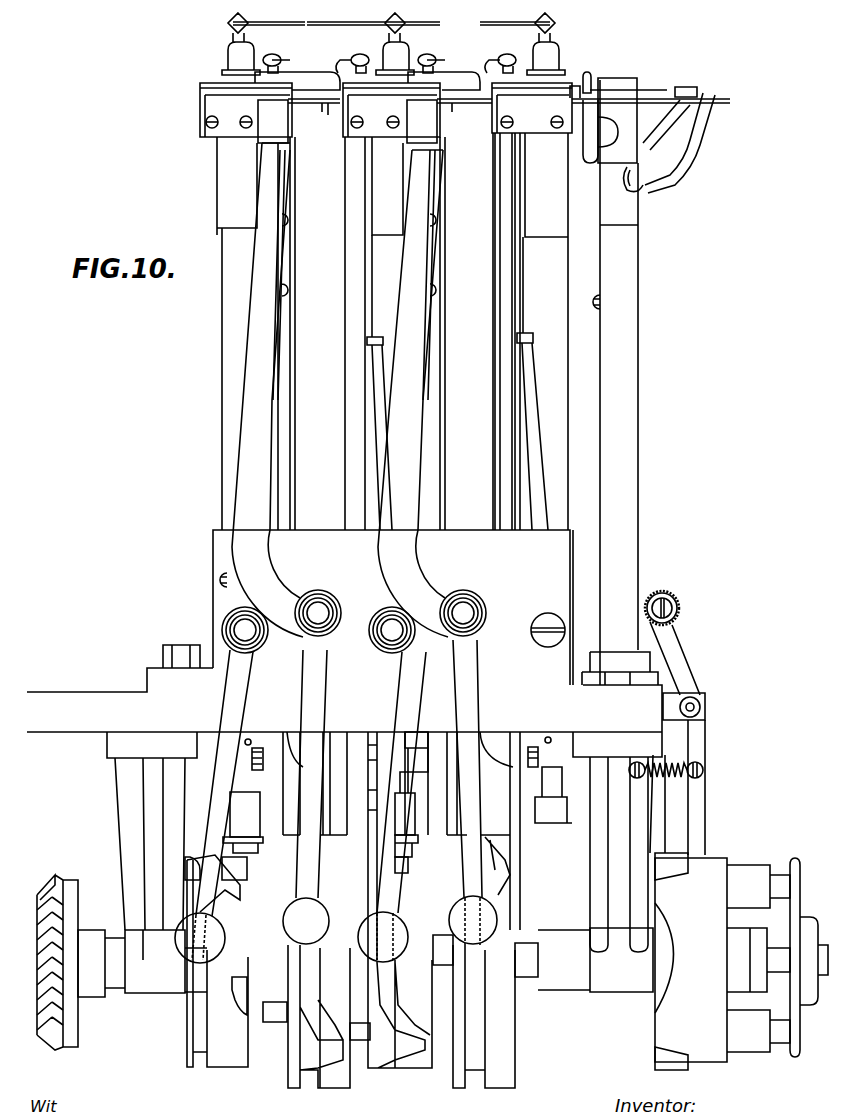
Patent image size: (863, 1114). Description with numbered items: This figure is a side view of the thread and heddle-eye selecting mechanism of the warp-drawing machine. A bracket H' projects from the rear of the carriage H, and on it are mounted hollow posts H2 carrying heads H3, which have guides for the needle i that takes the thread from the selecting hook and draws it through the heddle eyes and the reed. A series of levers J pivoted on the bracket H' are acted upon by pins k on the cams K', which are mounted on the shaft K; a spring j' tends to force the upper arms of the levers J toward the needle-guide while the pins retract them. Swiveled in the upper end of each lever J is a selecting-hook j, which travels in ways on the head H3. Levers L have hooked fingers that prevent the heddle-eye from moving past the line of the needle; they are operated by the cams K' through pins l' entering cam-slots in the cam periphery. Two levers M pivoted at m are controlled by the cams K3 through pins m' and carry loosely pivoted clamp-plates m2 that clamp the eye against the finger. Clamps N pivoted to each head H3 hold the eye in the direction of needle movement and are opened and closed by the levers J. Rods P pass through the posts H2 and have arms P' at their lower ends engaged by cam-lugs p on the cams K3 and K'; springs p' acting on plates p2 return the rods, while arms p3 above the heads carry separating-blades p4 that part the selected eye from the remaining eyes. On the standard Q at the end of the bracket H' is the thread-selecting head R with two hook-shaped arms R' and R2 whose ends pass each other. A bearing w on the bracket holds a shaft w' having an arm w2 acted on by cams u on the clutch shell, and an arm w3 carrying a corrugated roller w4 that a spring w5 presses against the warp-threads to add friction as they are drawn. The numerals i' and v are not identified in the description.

The separating-blade p4 is at (391, 16).
The arm p3 is at (389, 46).
The selecting-hook j is at (395, 55).
The clamp-plate m2 is at (417, 82).
The head H3 is at (386, 113).
The needle i is at (509, 110).
The clamp N is at (392, 124).
The thread-selecting head R is at (640, 111).
The arm R2 is at (657, 146).
The arm R' is at (680, 143).
The hollow post H2 is at (392, 331).
The standard Q is at (615, 382).
The lever L is at (340, 390).
The lever J is at (399, 331).
The spring j' is at (410, 340).
The lever M is at (387, 583).
The pivot m is at (354, 621).
The corrugated roller w4 is at (681, 608).
The arm w3 is at (682, 658).
The shaft w' is at (705, 705).
The bearing w is at (684, 712).
The arm w2 is at (691, 787).
The spring w5 is at (686, 785).
The bracket H' is at (344, 688).
The carriage H is at (384, 825).
The pin m' is at (300, 806).
The pin l' is at (390, 792).
The rod P is at (306, 806).
The arm P' is at (326, 845).
The plate p2 is at (402, 780).
The spring p' is at (395, 753).
The cam-lug p is at (348, 926).
The bevel gear i' is at (114, 962).
The cam K3 is at (309, 964).
The cam K' is at (401, 1016).
The pin k is at (400, 990).
The shaft K is at (595, 960).
The hub v is at (741, 960).
The cam u is at (671, 953).